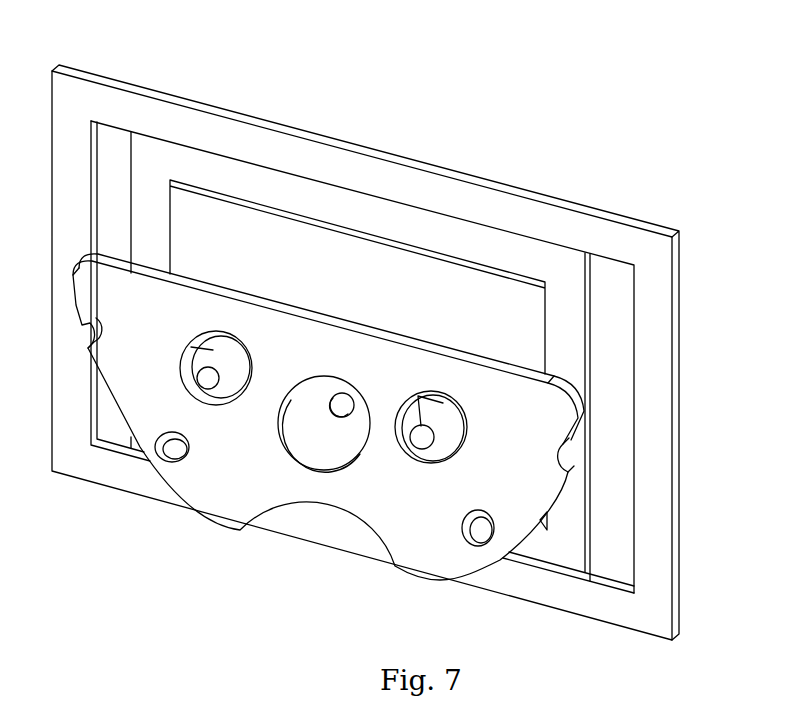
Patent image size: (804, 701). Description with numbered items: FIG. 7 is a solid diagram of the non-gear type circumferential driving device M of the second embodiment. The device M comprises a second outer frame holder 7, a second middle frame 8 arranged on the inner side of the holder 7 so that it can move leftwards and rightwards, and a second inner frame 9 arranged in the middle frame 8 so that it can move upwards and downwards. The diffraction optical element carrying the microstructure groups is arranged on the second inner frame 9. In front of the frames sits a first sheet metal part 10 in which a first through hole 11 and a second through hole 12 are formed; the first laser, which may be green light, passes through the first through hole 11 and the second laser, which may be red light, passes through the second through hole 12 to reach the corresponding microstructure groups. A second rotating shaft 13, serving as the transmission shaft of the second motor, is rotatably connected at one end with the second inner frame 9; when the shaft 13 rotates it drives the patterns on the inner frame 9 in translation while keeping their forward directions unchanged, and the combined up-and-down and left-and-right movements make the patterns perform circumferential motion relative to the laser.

The second outer frame holder 7 is at (98, 140).
The second middle frame 8 is at (590, 333).
The second inner frame 9 is at (443, 258).
The first sheet metal part 10 is at (190, 285).
The first through hole 11 is at (220, 378).
The second through hole 12 is at (422, 438).
The second rotating shaft 13 is at (342, 407).
The circumferential driving device M is at (676, 478).